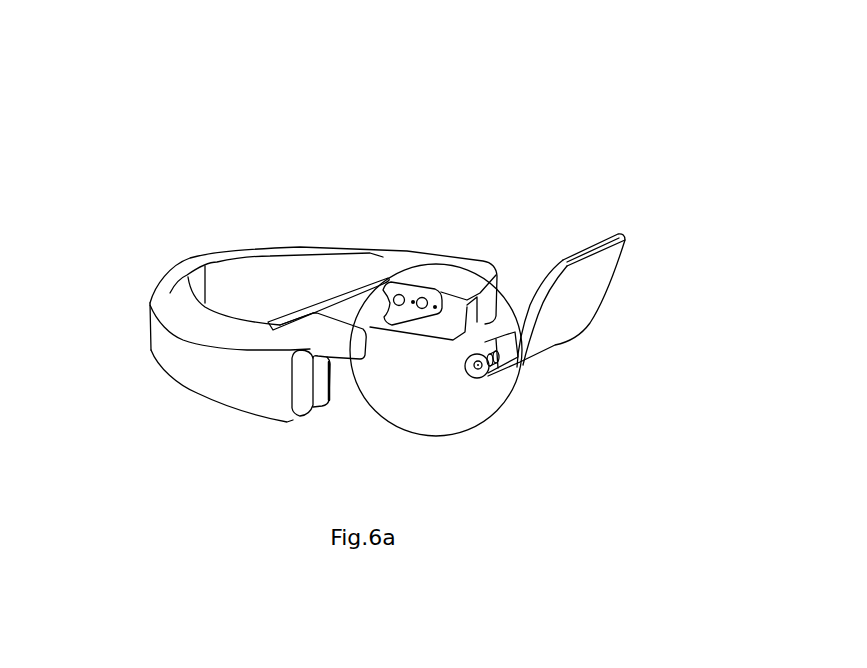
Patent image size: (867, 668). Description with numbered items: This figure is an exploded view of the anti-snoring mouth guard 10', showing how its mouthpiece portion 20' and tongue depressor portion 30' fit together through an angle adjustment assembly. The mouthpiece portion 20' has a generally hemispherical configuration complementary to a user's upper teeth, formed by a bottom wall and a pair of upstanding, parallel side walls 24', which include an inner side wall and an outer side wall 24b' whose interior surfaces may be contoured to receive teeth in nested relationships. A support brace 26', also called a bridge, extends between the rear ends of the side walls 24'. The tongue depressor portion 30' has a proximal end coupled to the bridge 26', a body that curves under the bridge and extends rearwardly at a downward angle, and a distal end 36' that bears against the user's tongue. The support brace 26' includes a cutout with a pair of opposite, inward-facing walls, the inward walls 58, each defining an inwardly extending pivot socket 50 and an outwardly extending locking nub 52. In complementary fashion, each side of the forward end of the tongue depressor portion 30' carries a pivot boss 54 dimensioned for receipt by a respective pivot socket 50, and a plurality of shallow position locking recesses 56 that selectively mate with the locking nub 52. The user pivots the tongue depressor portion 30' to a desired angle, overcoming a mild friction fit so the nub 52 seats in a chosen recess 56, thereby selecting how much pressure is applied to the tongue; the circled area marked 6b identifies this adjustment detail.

The anti-snoring mouth guard 10' is at (433, 173).
The mouthpiece portion 20' is at (323, 224).
The side walls 24' is at (302, 431).
The outer side wall 24b' is at (230, 393).
The support brace 26' is at (225, 328).
The tongue depressor portion 30' is at (622, 308).
The distal end 36' is at (595, 212).
The pivot sockets 50 is at (400, 295).
The locking nub 52 is at (413, 302).
The pivot boss 54 is at (478, 366).
The position locking recesses 56 is at (491, 370).
The inward walls 58 is at (408, 317).
The detail region of Fig. 6b is at (503, 400).